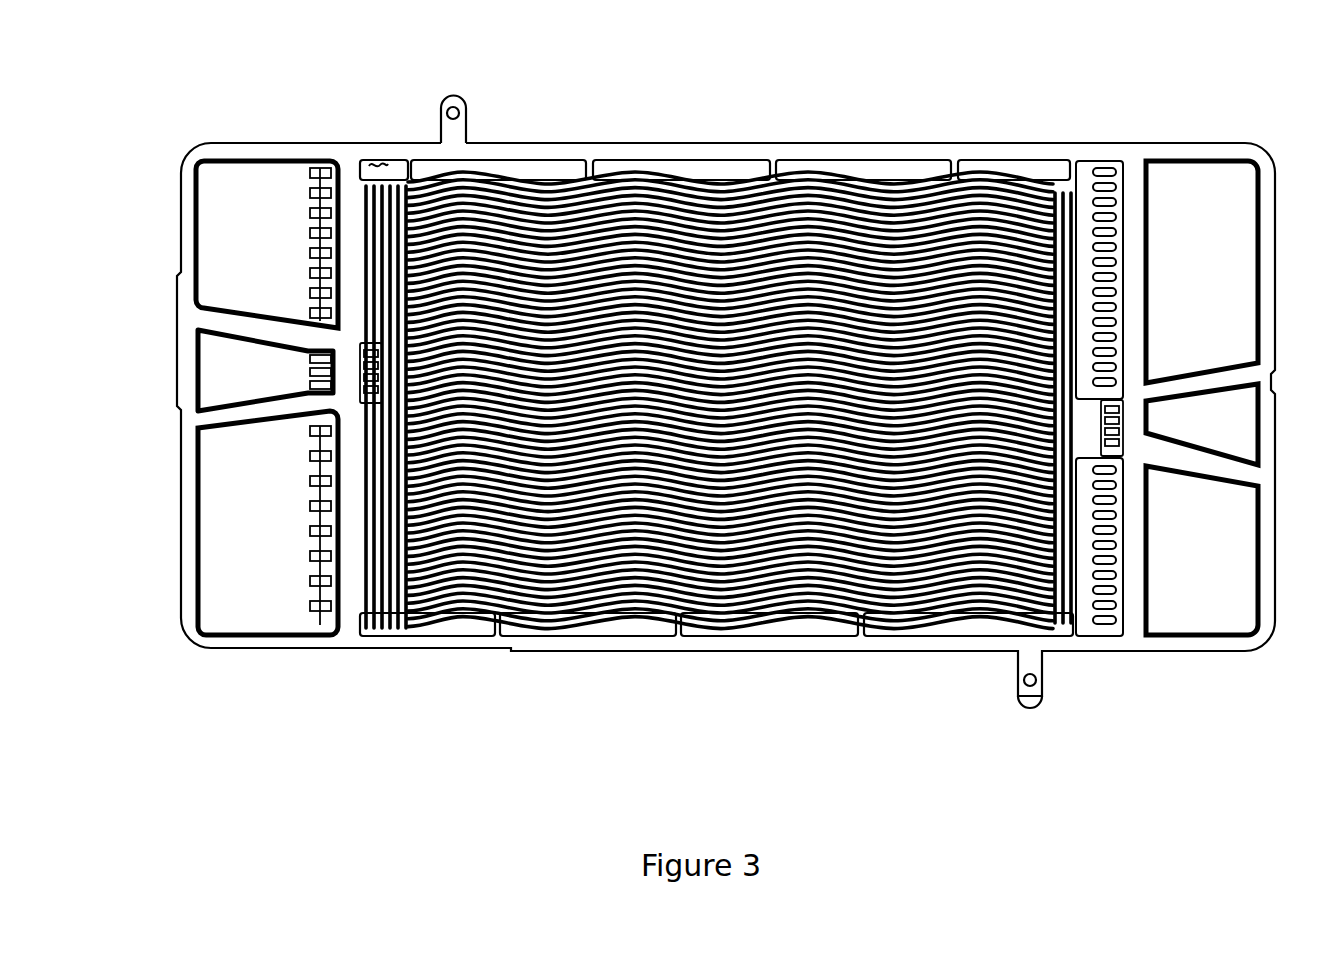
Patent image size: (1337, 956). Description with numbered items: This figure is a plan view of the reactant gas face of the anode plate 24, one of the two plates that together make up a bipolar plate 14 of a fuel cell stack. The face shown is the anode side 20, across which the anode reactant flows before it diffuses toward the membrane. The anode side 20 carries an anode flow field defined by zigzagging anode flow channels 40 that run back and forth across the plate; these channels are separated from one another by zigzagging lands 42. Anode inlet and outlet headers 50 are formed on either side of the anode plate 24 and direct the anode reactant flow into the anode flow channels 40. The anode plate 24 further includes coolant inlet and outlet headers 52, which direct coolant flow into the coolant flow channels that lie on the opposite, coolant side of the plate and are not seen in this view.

The bipolar plate 14 is at (550, 133).
The anode side 20 is at (378, 152).
The anode plate 24 is at (668, 135).
The anode flow channels 40 is at (866, 180).
The lands 42 is at (1058, 178).
The anode inlet and outlet headers 50 is at (300, 362).
The coolant inlet and outlet headers 52 is at (1140, 245).